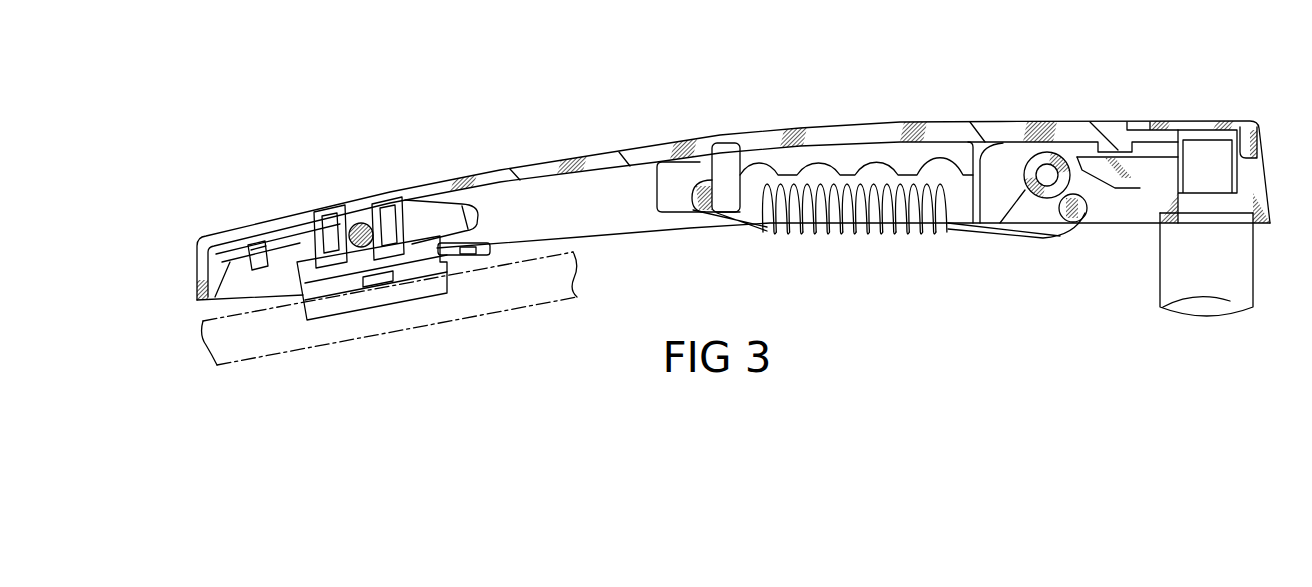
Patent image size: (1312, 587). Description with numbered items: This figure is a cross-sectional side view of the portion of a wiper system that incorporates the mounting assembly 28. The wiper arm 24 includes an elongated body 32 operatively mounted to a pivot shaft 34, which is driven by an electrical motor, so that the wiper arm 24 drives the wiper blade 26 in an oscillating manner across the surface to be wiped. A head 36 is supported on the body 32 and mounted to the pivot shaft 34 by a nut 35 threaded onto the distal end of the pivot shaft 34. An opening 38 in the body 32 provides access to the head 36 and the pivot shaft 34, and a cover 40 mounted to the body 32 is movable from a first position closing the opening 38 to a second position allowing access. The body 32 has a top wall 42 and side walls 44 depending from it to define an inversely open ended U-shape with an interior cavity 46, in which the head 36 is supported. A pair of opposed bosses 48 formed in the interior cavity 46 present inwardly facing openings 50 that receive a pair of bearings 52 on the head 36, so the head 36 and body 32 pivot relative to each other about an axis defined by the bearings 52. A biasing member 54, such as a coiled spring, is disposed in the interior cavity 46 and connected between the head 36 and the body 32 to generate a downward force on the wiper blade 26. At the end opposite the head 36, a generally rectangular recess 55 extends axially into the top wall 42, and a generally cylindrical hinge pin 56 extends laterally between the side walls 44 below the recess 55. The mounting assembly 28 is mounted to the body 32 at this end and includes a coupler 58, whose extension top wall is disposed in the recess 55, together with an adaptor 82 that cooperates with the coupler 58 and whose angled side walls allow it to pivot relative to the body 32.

The wiper arm 24 is at (447, 140).
The wiper blade 26 is at (335, 345).
The mounting assembly 28 is at (234, 228).
The elongated body 32 is at (692, 137).
The pivot shaft 34 is at (1240, 263).
The nut 35 is at (1217, 178).
The head 36 is at (1127, 224).
The opening 38 is at (1131, 141).
The cover 40 is at (1254, 120).
The top wall 42 is at (720, 140).
The side walls 44 is at (612, 190).
The interior cavity 46 is at (860, 147).
The bosses 48 is at (1066, 224).
The inwardly facing openings 50 is at (1063, 158).
The bearings 52 is at (1024, 189).
The biasing member 54 is at (858, 231).
The recess 55 is at (390, 195).
The hinge pin 56 is at (393, 290).
The coupler 58 is at (192, 268).
The adaptor 82 is at (452, 296).